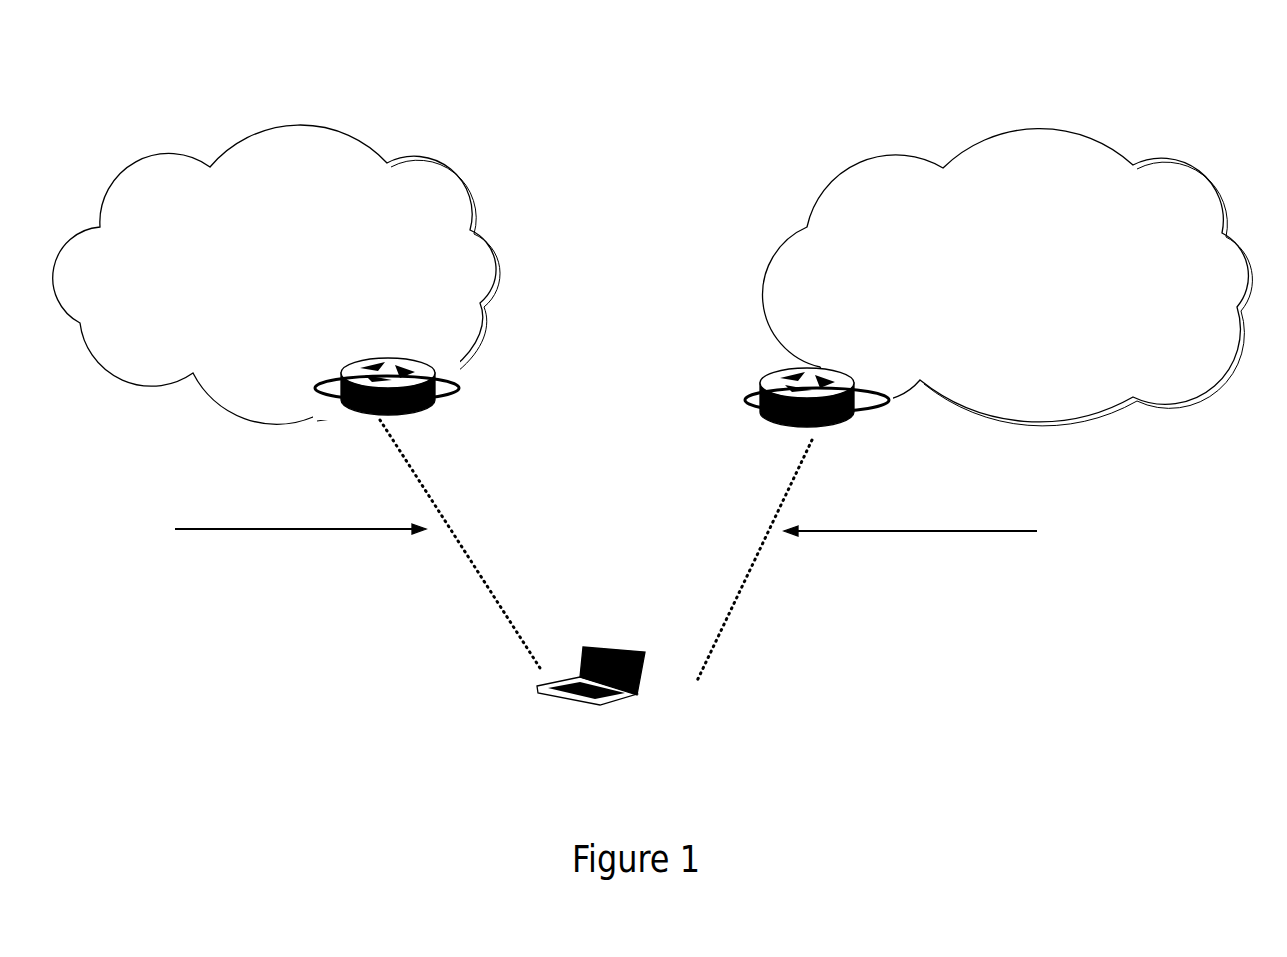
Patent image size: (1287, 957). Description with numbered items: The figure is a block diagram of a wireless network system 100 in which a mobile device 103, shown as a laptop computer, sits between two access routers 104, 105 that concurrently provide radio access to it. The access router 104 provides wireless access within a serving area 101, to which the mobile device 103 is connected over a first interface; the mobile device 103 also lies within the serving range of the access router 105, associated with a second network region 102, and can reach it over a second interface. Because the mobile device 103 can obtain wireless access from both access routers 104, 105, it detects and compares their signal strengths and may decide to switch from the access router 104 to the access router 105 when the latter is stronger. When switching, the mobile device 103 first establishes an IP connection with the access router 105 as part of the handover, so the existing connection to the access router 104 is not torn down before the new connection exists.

The network system 100 is at (647, 103).
The area 101 is at (500, 270).
The second IEEE 802.16e network (new access router network) 102 is at (1178, 402).
The mobile device 103 is at (648, 687).
The access router 104 is at (430, 402).
The access router 105 is at (863, 435).